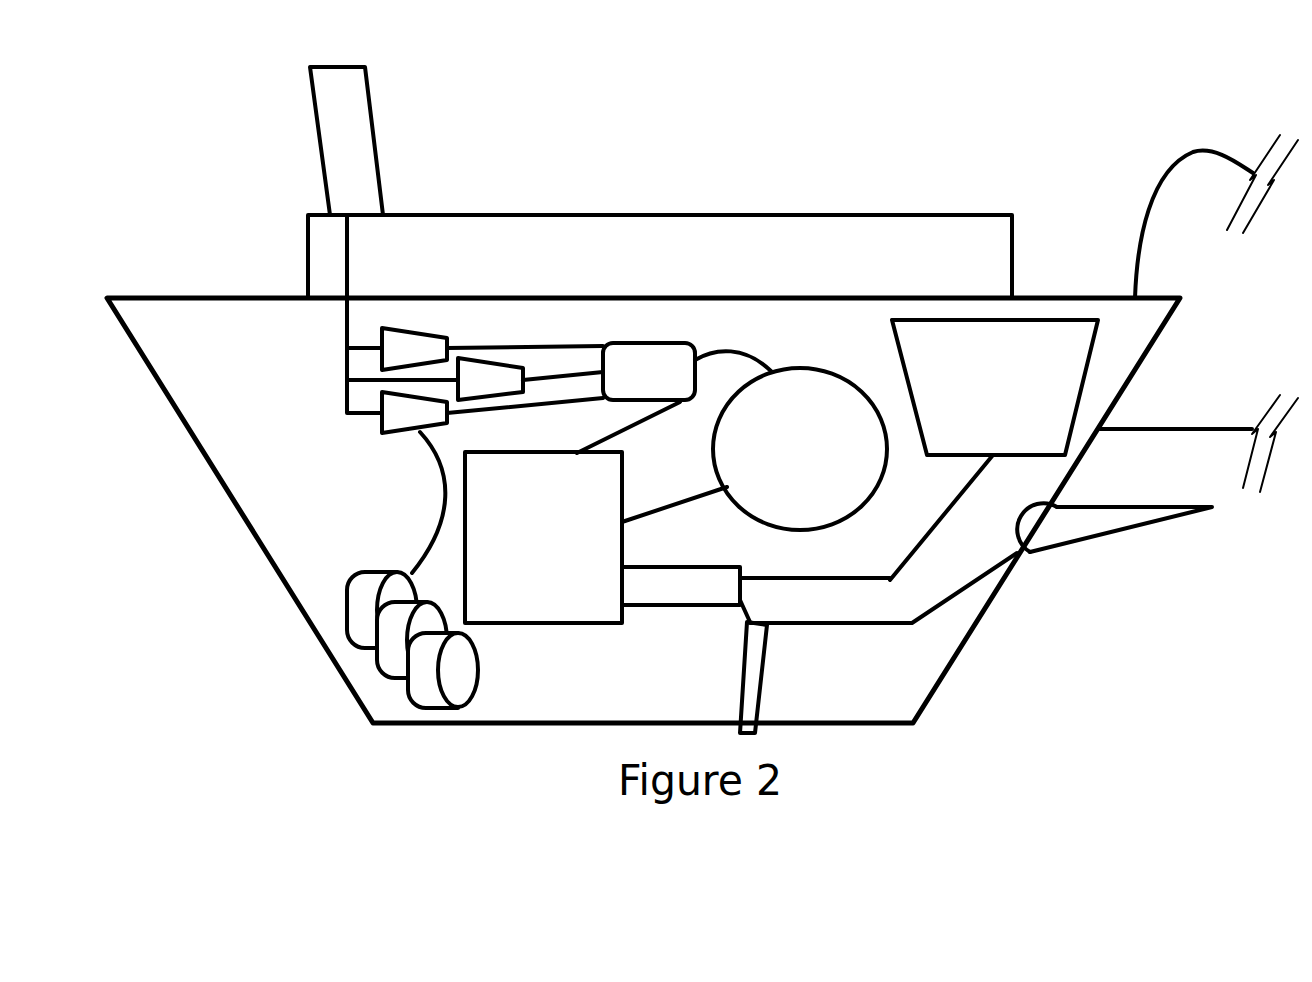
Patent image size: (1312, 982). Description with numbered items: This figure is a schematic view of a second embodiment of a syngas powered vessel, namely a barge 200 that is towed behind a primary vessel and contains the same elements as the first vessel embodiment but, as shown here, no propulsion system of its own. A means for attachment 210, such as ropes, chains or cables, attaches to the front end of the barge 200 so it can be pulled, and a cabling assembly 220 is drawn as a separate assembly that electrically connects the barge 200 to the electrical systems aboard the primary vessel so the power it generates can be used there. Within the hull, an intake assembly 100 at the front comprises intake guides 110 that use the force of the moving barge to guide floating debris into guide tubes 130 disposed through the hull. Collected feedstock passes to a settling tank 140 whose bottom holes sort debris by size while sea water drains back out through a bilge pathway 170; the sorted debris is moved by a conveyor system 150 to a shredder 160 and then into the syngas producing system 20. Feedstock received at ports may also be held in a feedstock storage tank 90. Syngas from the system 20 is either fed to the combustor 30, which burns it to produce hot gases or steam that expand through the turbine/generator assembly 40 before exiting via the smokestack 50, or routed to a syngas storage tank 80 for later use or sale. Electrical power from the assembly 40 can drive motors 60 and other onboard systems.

The barge 200 is at (872, 192).
The cabling assembly 220 is at (1140, 218).
The means for attachment 210 is at (1177, 427).
The smokestack 50 is at (359, 158).
The turbine/generator assembly 40 is at (362, 434).
The combustor 30 is at (661, 382).
The syngas producing system 20 is at (553, 559).
The syngas storage tank 80 is at (815, 456).
The feedstock storage tank 90 is at (1006, 394).
The motors 60 is at (493, 658).
The shredder 160 is at (697, 596).
The conveyor system 150 is at (742, 617).
The bilge pathway 170 is at (760, 703).
The settling tank 140 is at (909, 636).
The guide tubes 130 is at (1033, 523).
The intake assembly 100 is at (1124, 580).
The intake guides 110 is at (1127, 517).